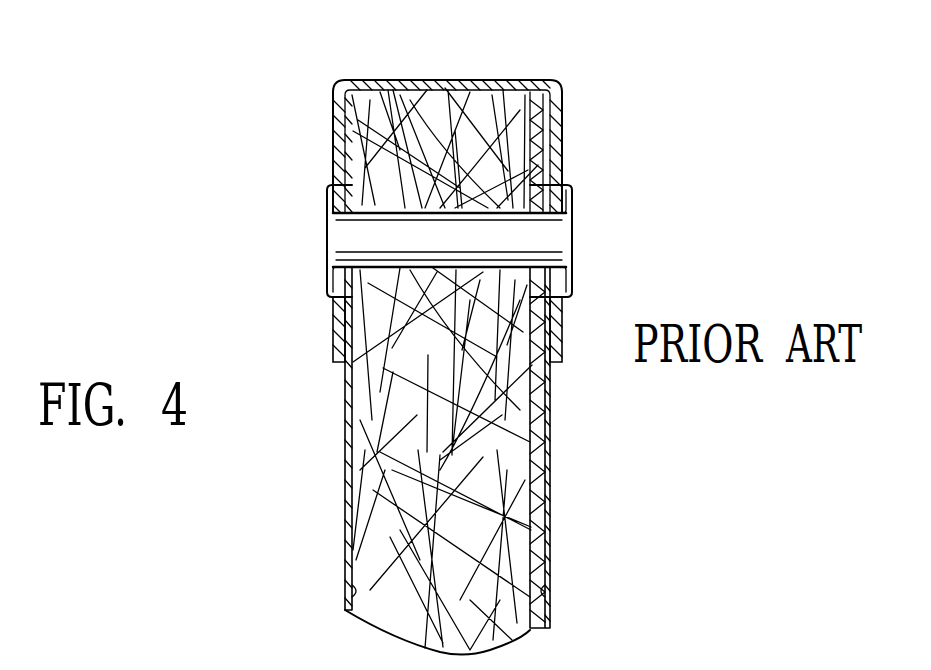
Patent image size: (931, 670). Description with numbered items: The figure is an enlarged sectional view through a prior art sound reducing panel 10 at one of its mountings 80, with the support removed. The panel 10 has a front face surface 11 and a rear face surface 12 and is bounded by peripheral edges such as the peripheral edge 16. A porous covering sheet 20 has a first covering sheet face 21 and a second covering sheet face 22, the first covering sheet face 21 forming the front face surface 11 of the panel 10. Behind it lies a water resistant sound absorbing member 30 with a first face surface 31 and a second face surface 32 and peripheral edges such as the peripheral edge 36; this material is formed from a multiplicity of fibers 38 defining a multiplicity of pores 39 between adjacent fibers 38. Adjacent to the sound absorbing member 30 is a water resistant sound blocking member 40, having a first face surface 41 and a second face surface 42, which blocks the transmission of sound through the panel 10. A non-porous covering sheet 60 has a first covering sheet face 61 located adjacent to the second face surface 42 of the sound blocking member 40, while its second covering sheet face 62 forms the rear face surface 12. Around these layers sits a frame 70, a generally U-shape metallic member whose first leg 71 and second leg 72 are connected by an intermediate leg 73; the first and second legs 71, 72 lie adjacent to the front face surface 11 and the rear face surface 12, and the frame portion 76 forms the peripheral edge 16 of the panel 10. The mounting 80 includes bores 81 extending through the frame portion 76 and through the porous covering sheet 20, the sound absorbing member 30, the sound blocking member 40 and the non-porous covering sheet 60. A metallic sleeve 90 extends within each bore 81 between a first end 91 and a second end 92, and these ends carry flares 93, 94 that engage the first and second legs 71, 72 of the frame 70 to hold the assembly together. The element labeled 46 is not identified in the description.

The sound reducing panel 10 is at (662, 68).
The front face surface 11 is at (345, 515).
The rear face surface 12 is at (550, 553).
The peripheral edge 16 is at (450, 80).
The porous covering sheet 20 is at (347, 468).
The first covering sheet face 21 is at (347, 548).
The second covering sheet face 22 is at (347, 605).
The water resistant sound absorbing member 30 is at (372, 405).
The first face surface 31 is at (352, 423).
The second face surface 32 is at (532, 510).
The peripheral edge 36 is at (490, 88).
The fibers 38 is at (347, 110).
The pores 39 is at (378, 100).
The water resistant sound blocking member 40 is at (548, 88).
The first face surface 41 is at (527, 100).
The second face surface 42 is at (563, 117).
The liner wall 46 is at (537, 100).
The non-porous covering sheet 60 is at (548, 463).
The first covering sheet face 61 is at (552, 612).
The second covering sheet face 62 is at (548, 423).
The frame 70 is at (383, 80).
The first leg 71 is at (333, 135).
The second leg 72 is at (563, 150).
The intermediate leg 73 is at (423, 80).
The frame portion 76 is at (372, 78).
The mounting 80 is at (327, 270).
The bores 81 is at (553, 242).
The metallic sleeve 90 is at (327, 235).
The first end 91 is at (325, 247).
The second end 92 is at (572, 257).
The flare 93 is at (327, 200).
The flare 94 is at (572, 198).